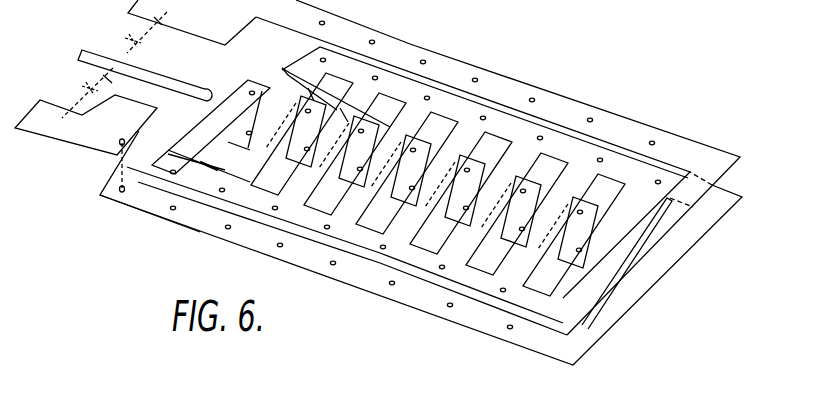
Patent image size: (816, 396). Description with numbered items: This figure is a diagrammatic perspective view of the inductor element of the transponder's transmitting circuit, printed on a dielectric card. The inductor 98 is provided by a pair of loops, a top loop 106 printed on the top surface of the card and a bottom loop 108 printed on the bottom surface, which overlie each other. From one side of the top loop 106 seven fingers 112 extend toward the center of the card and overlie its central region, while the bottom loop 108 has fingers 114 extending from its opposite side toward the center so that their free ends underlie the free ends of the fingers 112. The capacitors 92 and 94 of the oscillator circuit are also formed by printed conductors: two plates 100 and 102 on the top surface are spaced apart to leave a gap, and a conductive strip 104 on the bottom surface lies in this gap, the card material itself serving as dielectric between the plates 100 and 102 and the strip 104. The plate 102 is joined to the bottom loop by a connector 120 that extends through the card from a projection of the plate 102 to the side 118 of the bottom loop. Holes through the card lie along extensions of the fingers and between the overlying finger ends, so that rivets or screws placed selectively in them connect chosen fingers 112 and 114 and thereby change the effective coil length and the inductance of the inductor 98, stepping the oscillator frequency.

The capacitor 92 is at (128, 34).
The capacitor 94 is at (96, 83).
The inductor 98 is at (652, 265).
The plate 100 is at (230, 28).
The plate 102 is at (143, 120).
The conductive strip 104 is at (172, 80).
The top loop 106 is at (550, 97).
The bottom loop 108 is at (360, 275).
The fingers 112 is at (194, 159).
The fingers 114 is at (322, 90).
The side of bottom loop 118 is at (132, 195).
The connector 120 is at (118, 170).